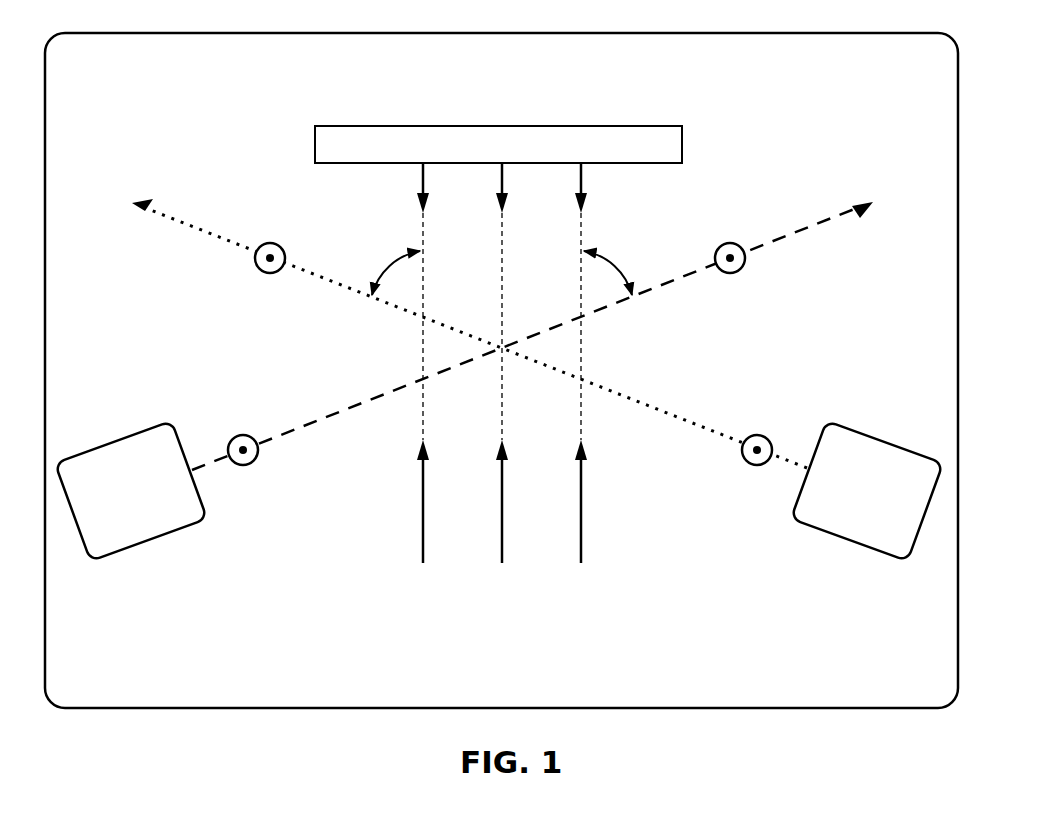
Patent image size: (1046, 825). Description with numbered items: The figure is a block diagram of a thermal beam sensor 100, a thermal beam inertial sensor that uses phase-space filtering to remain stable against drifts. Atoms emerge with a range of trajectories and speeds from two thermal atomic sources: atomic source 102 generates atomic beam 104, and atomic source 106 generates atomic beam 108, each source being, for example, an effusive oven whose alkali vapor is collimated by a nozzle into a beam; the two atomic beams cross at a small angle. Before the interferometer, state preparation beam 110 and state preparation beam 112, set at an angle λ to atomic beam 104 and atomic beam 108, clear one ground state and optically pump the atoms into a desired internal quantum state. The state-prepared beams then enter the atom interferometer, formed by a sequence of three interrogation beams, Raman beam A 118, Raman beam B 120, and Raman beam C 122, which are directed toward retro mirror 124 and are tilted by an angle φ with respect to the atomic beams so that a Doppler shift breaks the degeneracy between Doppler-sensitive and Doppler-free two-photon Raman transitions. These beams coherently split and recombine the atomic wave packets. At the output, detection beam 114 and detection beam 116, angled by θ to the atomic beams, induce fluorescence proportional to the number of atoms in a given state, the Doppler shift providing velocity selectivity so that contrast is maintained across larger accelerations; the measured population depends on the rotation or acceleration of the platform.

The thermal beam sensor 100 is at (117, 32).
The atomic source 102 is at (150, 547).
The atomic beam 104 is at (800, 230).
The atomic source 106 is at (850, 547).
The atomic beam 108 is at (183, 223).
The state preparation beam 110 is at (257, 455).
The state preparation beam 112 is at (743, 445).
The detection beam 114 is at (745, 265).
The detection beam 116 is at (267, 273).
The Raman beam A 118 is at (423, 568).
The Raman beam B 120 is at (502, 568).
The Raman beam C 122 is at (581, 568).
The retro mirror 124 is at (385, 123).